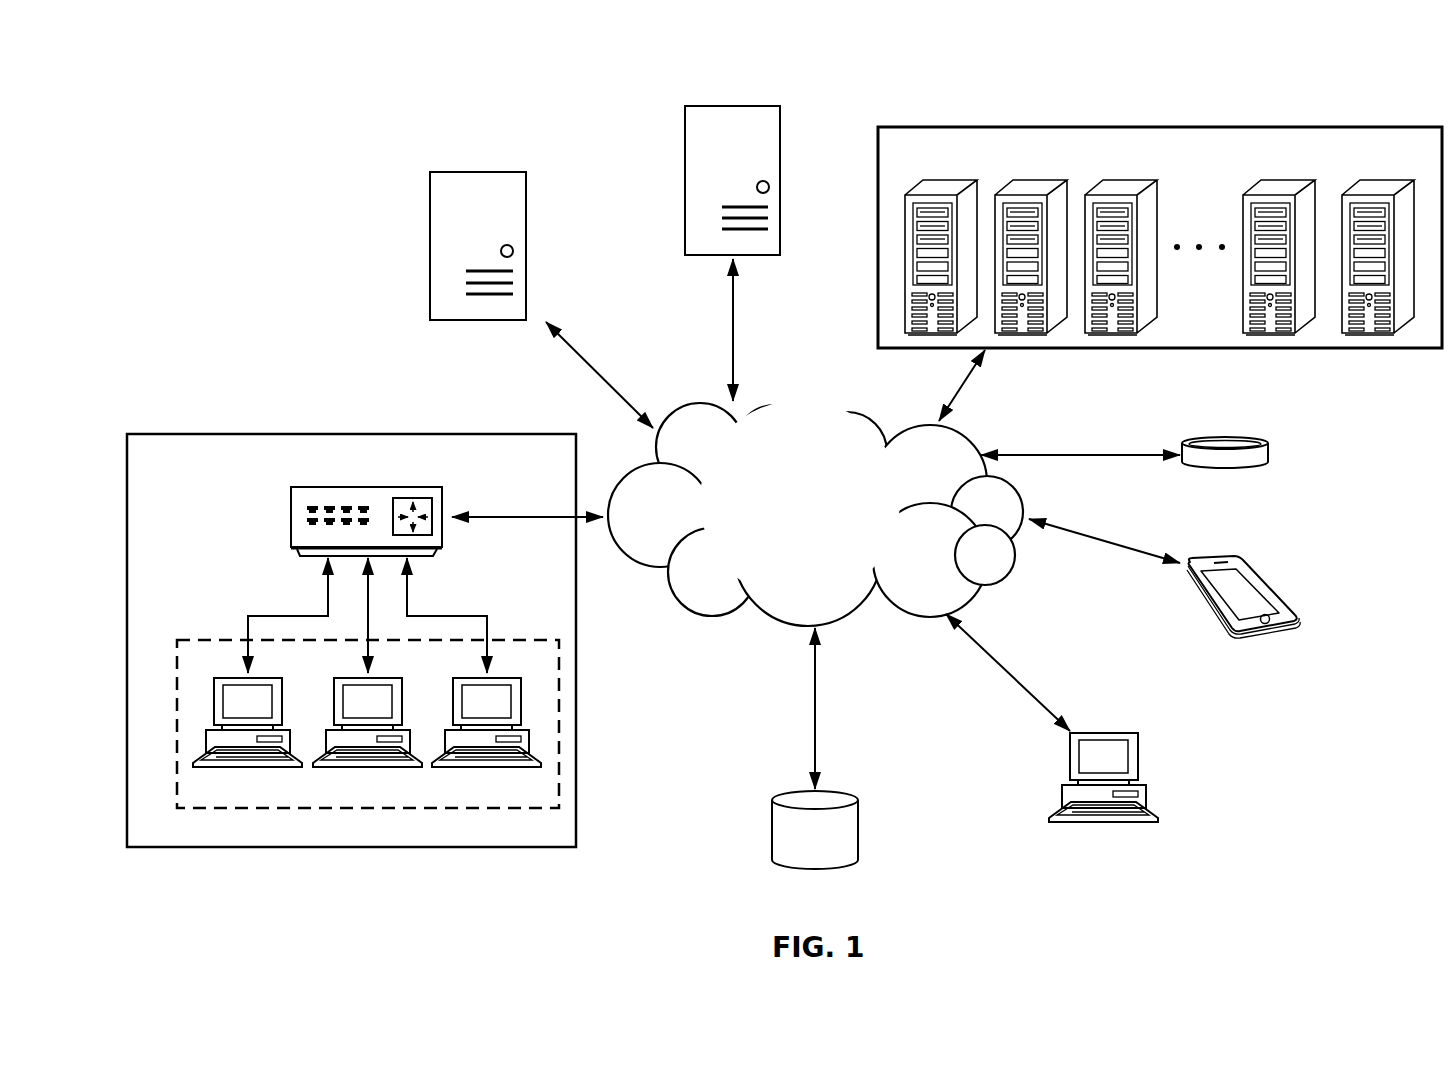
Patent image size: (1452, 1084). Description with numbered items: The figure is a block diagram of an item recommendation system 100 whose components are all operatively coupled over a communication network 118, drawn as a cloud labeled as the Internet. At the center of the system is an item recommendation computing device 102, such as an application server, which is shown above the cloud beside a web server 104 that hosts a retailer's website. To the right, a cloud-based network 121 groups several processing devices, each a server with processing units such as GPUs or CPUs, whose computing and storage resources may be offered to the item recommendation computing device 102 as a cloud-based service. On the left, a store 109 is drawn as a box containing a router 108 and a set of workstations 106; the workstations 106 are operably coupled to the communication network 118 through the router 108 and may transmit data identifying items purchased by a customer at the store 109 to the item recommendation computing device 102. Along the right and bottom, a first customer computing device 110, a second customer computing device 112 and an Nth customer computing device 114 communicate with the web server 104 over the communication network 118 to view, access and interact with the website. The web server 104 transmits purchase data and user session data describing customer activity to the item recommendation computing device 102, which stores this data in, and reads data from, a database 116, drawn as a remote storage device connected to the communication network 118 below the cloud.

The item recommendation system 100 is at (1024, 82).
The item recommendation computing device 102 is at (758, 106).
The web server 104 is at (450, 172).
The workstation(s) 106 is at (215, 640).
The router 108 is at (317, 487).
The store 109 is at (207, 434).
The first customer computing device 110 is at (1237, 438).
The second customer computing device 112 is at (1262, 588).
The Nth customer computing device 114 is at (1128, 733).
The database 116 is at (845, 795).
The communication network 118 is at (785, 403).
The cloud-based network 121 is at (1228, 127).